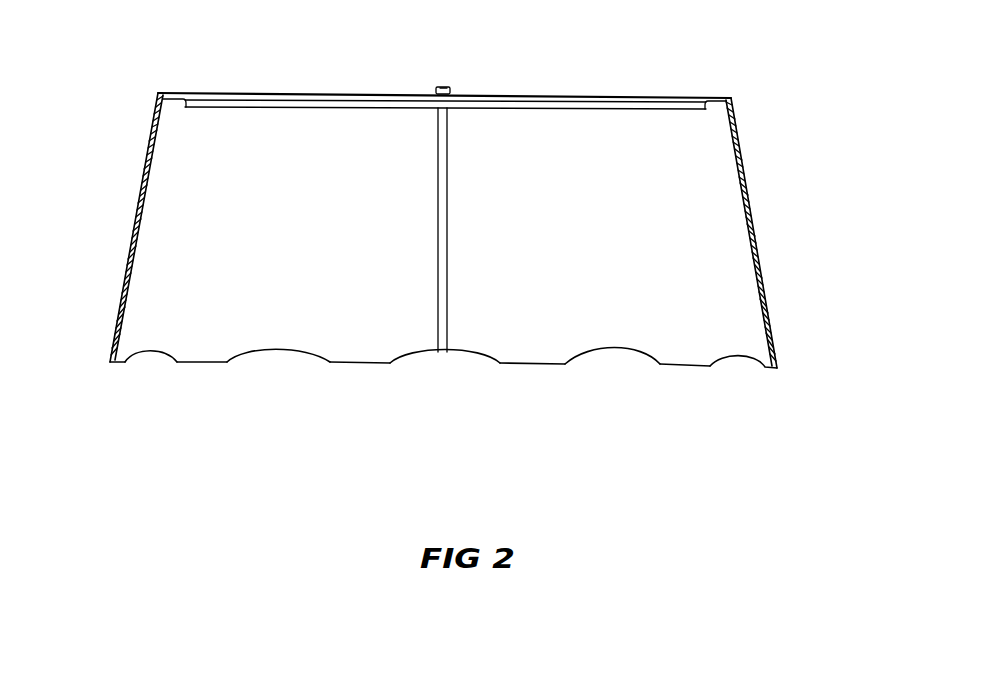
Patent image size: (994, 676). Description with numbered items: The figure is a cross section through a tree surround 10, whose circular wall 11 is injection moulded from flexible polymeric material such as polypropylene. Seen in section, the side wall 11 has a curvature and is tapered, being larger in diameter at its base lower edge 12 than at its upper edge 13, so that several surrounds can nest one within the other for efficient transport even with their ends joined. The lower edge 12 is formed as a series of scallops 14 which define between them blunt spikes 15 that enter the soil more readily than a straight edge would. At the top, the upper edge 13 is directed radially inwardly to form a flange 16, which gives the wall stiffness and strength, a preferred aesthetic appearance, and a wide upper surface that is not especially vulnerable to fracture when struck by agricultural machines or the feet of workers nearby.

The tree surround 10 is at (471, 227).
The circular wall 11 is at (745, 172).
The lower edge 12 is at (110, 364).
The upper edge 13 is at (160, 92).
The scallops 14 is at (150, 352).
The blunt spikes 15 is at (347, 364).
The flange 16 is at (708, 100).